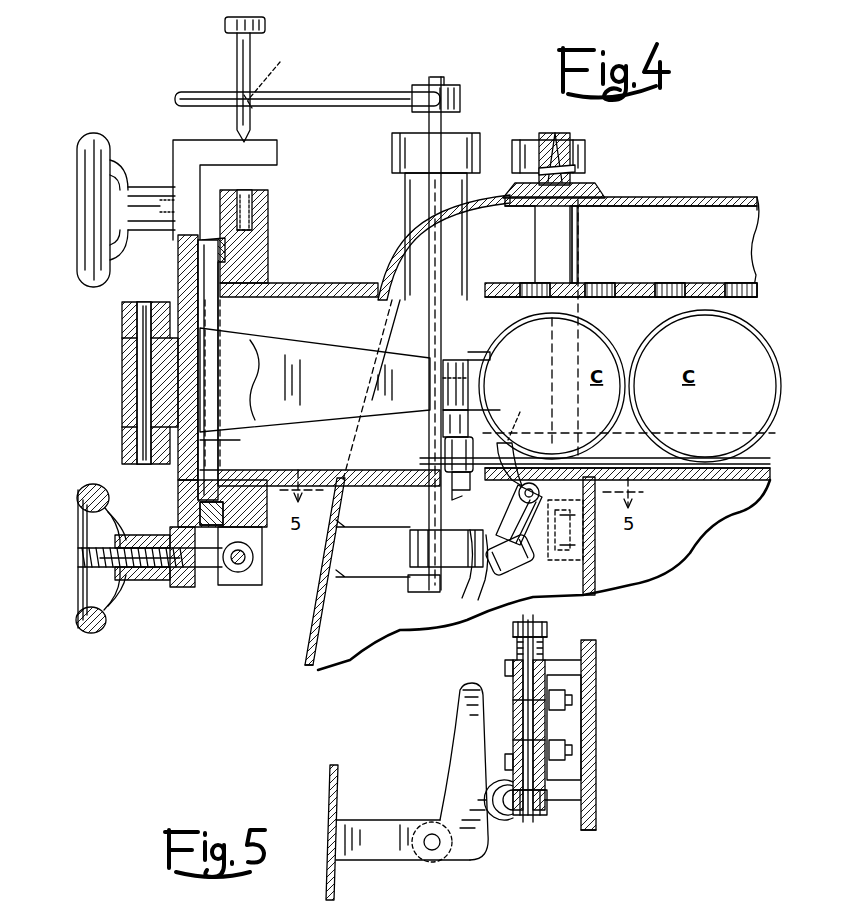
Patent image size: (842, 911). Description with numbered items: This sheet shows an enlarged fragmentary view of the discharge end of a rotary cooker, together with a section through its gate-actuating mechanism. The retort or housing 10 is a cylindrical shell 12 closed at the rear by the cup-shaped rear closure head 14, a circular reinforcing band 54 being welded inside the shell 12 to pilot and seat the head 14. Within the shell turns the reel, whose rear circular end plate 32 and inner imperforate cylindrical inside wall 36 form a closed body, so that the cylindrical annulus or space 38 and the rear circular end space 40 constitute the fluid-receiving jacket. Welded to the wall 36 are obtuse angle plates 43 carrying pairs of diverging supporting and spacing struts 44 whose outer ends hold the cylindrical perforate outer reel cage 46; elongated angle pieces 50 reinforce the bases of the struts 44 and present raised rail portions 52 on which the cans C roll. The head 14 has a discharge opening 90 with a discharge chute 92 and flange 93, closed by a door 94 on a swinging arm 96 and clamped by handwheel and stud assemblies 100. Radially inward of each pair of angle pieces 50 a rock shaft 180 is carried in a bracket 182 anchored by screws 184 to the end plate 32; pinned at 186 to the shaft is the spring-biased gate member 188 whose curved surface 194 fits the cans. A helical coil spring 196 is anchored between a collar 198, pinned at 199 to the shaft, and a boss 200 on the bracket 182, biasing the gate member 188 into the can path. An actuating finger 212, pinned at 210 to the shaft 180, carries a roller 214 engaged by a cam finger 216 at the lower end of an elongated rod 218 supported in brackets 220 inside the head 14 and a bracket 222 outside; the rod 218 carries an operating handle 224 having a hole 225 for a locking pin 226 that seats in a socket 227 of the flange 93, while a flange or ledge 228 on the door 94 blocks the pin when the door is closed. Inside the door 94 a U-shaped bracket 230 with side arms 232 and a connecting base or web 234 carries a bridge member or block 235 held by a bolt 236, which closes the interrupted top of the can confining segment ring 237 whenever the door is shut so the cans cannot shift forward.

In FIG. 4, the retort or housing 10 is at (666, 170).
In FIG. 4, the cylindrical shell 12 is at (690, 197).
In FIG. 4, the rear closure head 14 is at (306, 652).
In FIG. 5, the rear closure head 14 is at (330, 802).
In FIG. 4, the rear circular end plate 32 is at (600, 592).
In FIG. 5, the rear circular end plate 32 is at (598, 820).
In FIG. 4, the inner imperforate cylindrical inside wall 36 is at (675, 481).
In FIG. 4, the cylindrical annulus or space 38 is at (737, 213).
In FIG. 4, the rear circular end space 40 is at (312, 602).
In FIG. 4, the obtuse angle plates 43 is at (508, 442).
In FIG. 4, the supporting and spacing struts 44 is at (575, 298).
In FIG. 4, the cylindrical perforate outer reel cage 46 is at (650, 297).
In FIG. 4, the elongated angle pieces 50 is at (625, 463).
In FIG. 4, the raised rail portions 52 is at (640, 456).
In FIG. 4, the circular reinforcing band 54 is at (575, 215).
In FIG. 4, the discharge opening 90 is at (379, 297).
In FIG. 4, the discharge chute 92 is at (310, 284).
In FIG. 4, the flange 93 is at (268, 244).
In FIG. 4, the door 94 is at (176, 289).
In FIG. 4, the swinging arm 96 is at (128, 322).
In FIG. 4, the handwheel and stud assemblies 100 is at (80, 160).
In FIG. 4, the rock shaft 180 is at (519, 496).
In FIG. 5, the rock shaft 180 is at (530, 822).
In FIG. 4, the bracket 182 is at (595, 550).
In FIG. 5, the bracket 182 is at (577, 692).
In FIG. 4, the screw anchorage 184 is at (578, 562).
In FIG. 5, the screw anchorage 184 is at (576, 727).
In FIG. 5, the pin 186 is at (513, 742).
In FIG. 4, the spring-biased gate member 188 is at (483, 488).
In FIG. 4, the curved surface 194 is at (522, 417).
In FIG. 5, the helical coil spring 196 is at (545, 647).
In FIG. 5, the collar 198 is at (547, 626).
In FIG. 5, the pin 199 is at (547, 633).
In FIG. 5, the boss 200 is at (511, 668).
In FIG. 5, the pin 210 is at (548, 807).
In FIG. 4, the actuating finger 212 is at (512, 528).
In FIG. 4, the roller 214 is at (526, 571).
In FIG. 5, the roller 214 is at (507, 822).
In FIG. 4, the cam finger 216 is at (472, 582).
In FIG. 5, the cam finger 216 is at (462, 747).
In FIG. 4, the elongated rod 218 is at (444, 252).
In FIG. 5, the elongated rod 218 is at (433, 851).
In FIG. 4, the brackets 220 is at (376, 547).
In FIG. 5, the brackets 220 is at (375, 862).
In FIG. 4, the bracket 222 is at (405, 214).
In FIG. 4, the operating handle 224 is at (340, 92).
In FIG. 4, the hole 225 is at (274, 83).
In FIG. 4, the locking pin 226 is at (237, 60).
In FIG. 4, the socket 227 is at (250, 194).
In FIG. 4, the flange or ledge 228 is at (270, 150).
In FIG. 4, the U-shaped bracket 230 is at (290, 342).
In FIG. 4, the side arms 232 is at (320, 463).
In FIG. 4, the connecting base or web 234 is at (446, 358).
In FIG. 4, the bridge member or block 235 is at (470, 360).
In FIG. 4, the bolt 236 is at (443, 378).
In FIG. 4, the can confining segment ring 237 is at (455, 428).